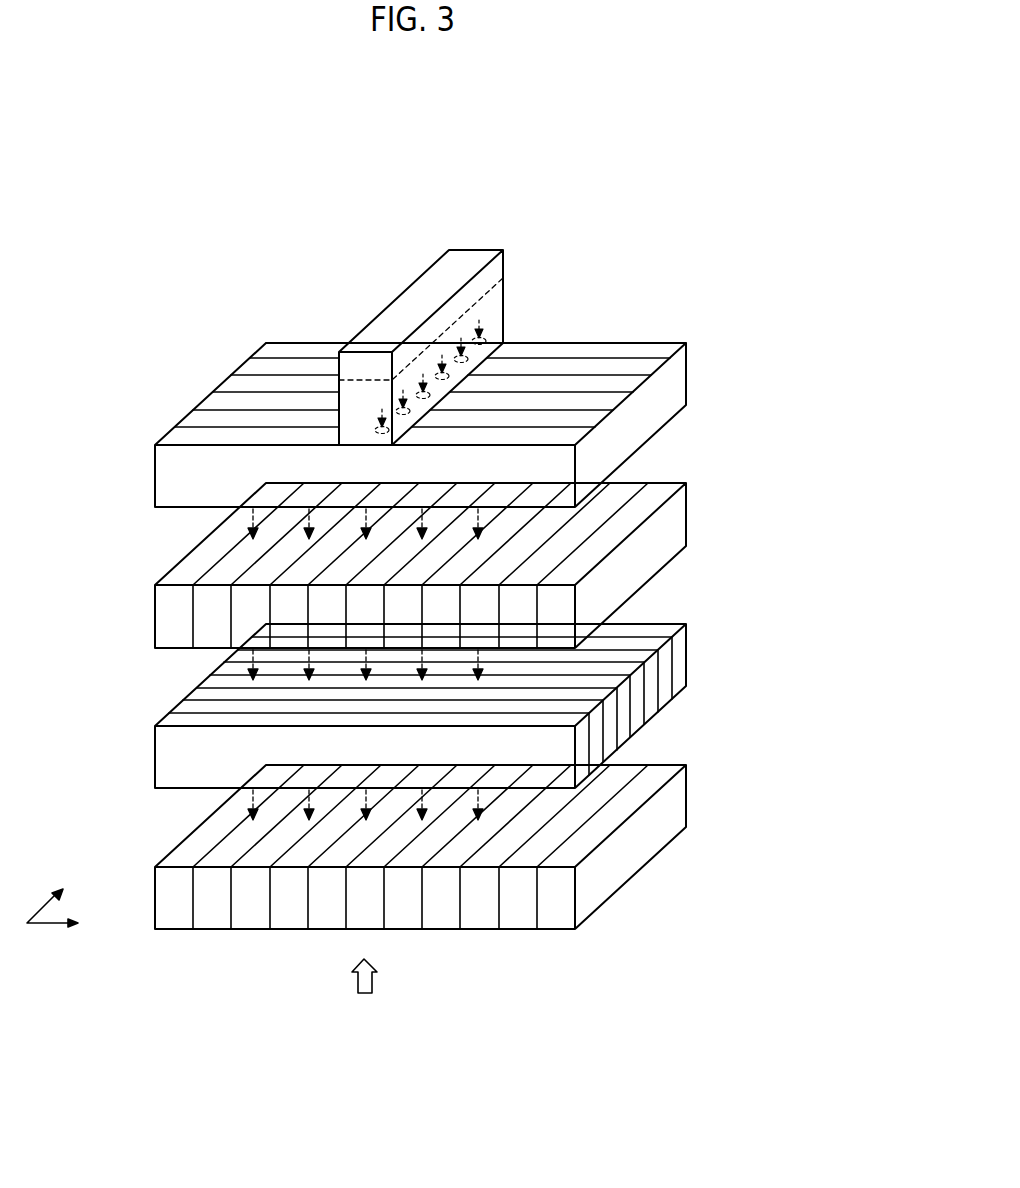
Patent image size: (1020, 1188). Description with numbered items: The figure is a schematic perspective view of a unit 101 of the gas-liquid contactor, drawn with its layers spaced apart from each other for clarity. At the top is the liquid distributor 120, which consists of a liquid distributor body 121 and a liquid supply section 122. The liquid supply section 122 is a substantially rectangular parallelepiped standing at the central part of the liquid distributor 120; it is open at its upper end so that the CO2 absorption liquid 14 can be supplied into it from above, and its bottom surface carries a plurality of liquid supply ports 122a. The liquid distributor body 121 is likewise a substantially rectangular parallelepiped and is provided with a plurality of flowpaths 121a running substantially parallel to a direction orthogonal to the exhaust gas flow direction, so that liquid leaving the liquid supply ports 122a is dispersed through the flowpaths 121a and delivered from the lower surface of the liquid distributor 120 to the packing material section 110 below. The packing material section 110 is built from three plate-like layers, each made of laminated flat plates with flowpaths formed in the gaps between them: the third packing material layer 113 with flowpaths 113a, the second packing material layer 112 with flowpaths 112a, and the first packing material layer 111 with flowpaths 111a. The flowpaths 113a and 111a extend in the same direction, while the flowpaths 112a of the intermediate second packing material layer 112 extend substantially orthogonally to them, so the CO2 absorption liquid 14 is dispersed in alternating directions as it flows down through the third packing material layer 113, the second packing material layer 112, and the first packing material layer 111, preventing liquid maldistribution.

The unit 101 is at (658, 217).
The CO2 absorption liquid 14 is at (440, 295).
The liquid distributor 120 is at (480, 348).
The liquid distributor body 121 is at (687, 372).
The flowpaths 121a is at (289, 354).
The liquid supply section 122 is at (476, 250).
The liquid supply ports 122a is at (482, 348).
The packing material section 110 is at (480, 692).
The first packing material layer 111 is at (687, 792).
The flowpaths 111a is at (623, 777).
The second packing material layer 112 is at (687, 653).
The flowpaths 112a is at (650, 634).
The third packing material layer 113 is at (687, 512).
The flowpaths 113a is at (628, 493).